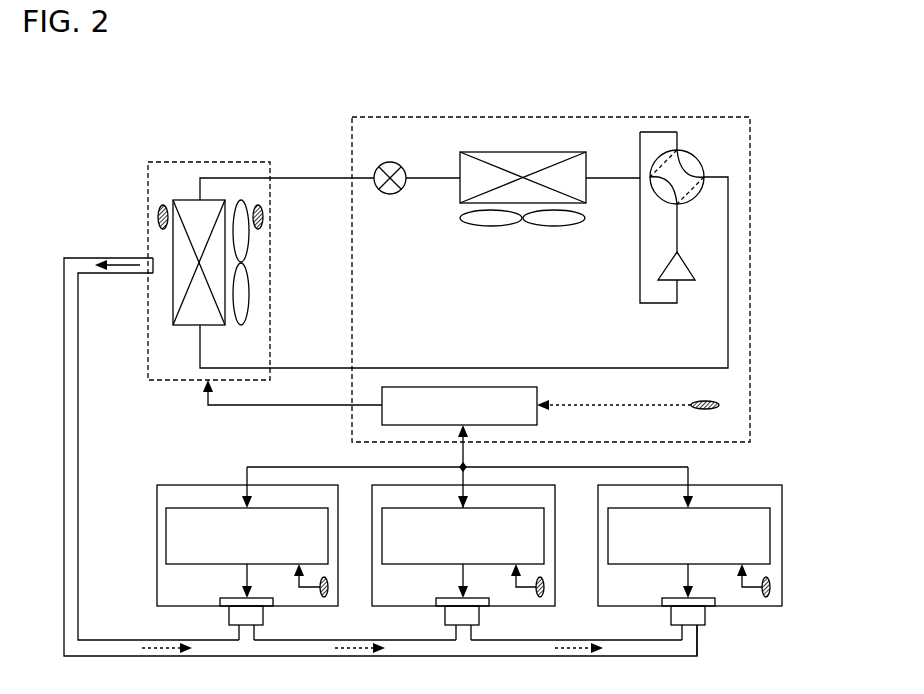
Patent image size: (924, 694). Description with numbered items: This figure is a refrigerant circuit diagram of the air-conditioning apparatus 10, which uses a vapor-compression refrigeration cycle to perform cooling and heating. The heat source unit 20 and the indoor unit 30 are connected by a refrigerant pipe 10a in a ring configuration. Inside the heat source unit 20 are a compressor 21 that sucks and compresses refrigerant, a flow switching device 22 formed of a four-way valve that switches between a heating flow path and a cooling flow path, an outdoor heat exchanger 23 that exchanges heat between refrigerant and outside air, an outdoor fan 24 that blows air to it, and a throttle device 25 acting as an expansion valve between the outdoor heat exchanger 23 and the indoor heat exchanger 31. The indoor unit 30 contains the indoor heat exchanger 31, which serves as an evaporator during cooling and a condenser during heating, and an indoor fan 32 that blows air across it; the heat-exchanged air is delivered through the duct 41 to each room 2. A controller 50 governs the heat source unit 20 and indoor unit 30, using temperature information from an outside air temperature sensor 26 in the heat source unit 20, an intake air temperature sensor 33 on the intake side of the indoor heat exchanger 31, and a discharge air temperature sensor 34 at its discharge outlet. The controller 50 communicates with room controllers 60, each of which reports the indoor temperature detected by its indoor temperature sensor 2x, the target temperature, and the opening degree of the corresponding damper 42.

The room 2 is at (157, 606).
The indoor temperature sensor 2x is at (328, 582).
The air-conditioning apparatus 10 is at (250, 106).
The refrigerant pipe 10a is at (308, 178).
The heat source unit 20 is at (352, 117).
The compressor 21 is at (688, 266).
The flow switching device 22 is at (697, 160).
The outdoor heat exchanger 23 is at (460, 195).
The outdoor fan 24 is at (552, 226).
The throttle device 25 is at (390, 194).
The outside air temperature sensor 26 is at (705, 409).
The indoor unit 30 is at (208, 162).
The indoor heat exchanger 31 is at (182, 325).
The indoor fan 32 is at (241, 325).
The intake air temperature sensor 33 is at (264, 216).
The discharge air temperature sensor 34 is at (157, 217).
The duct 41 is at (78, 444).
The damper 42 is at (263, 620).
The controller 50 is at (537, 390).
The room controller 60 is at (328, 540).